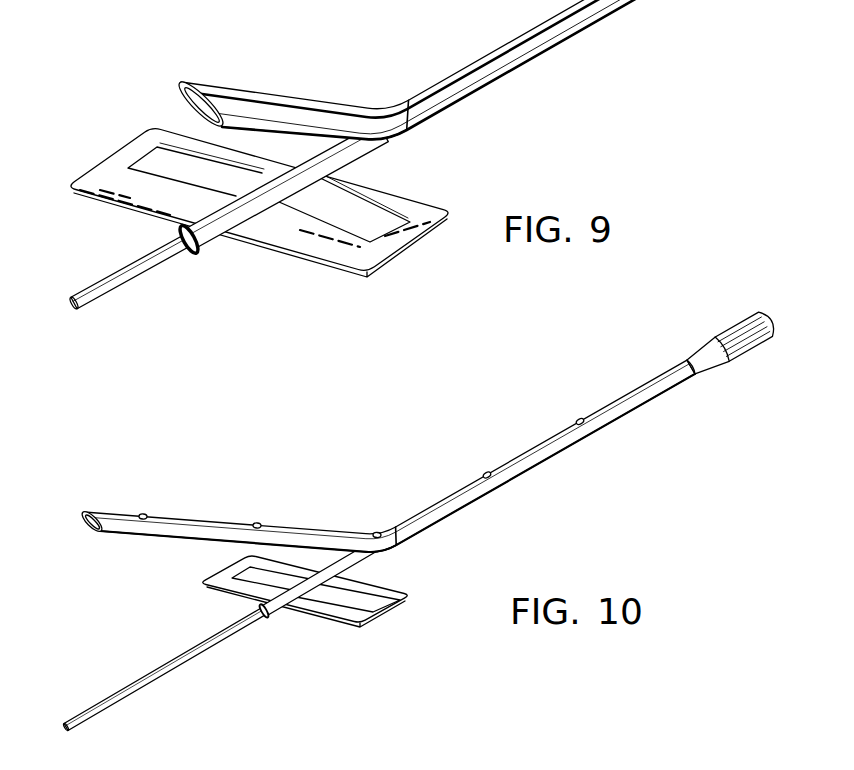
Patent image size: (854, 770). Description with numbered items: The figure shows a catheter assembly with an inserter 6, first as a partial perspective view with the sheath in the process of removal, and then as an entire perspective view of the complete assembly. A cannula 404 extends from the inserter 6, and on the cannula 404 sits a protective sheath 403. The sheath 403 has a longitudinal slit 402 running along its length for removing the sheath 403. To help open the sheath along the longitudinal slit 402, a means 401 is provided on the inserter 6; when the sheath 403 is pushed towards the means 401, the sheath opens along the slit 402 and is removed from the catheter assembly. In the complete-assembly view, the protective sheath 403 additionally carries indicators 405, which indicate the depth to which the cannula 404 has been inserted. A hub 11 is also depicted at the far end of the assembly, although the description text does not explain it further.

In FIG. 9, the inserter 6 is at (236, 247).
In FIG. 10, the inserter 6 is at (299, 614).
In FIG. 10, the hub 11 is at (740, 362).
In FIG. 9, the means for opening the sheath 401 is at (387, 141).
In FIG. 10, the means for opening the sheath 401 is at (382, 552).
In FIG. 9, the longitudinal slit 402 is at (207, 130).
In FIG. 10, the longitudinal slit 402 is at (93, 533).
In FIG. 9, the protective sheath 403 is at (460, 77).
In FIG. 10, the protective sheath 403 is at (333, 538).
In FIG. 9, the cannula 404 is at (131, 273).
In FIG. 10, the cannula 404 is at (187, 663).
In FIG. 10, the indicators 405 is at (577, 421).